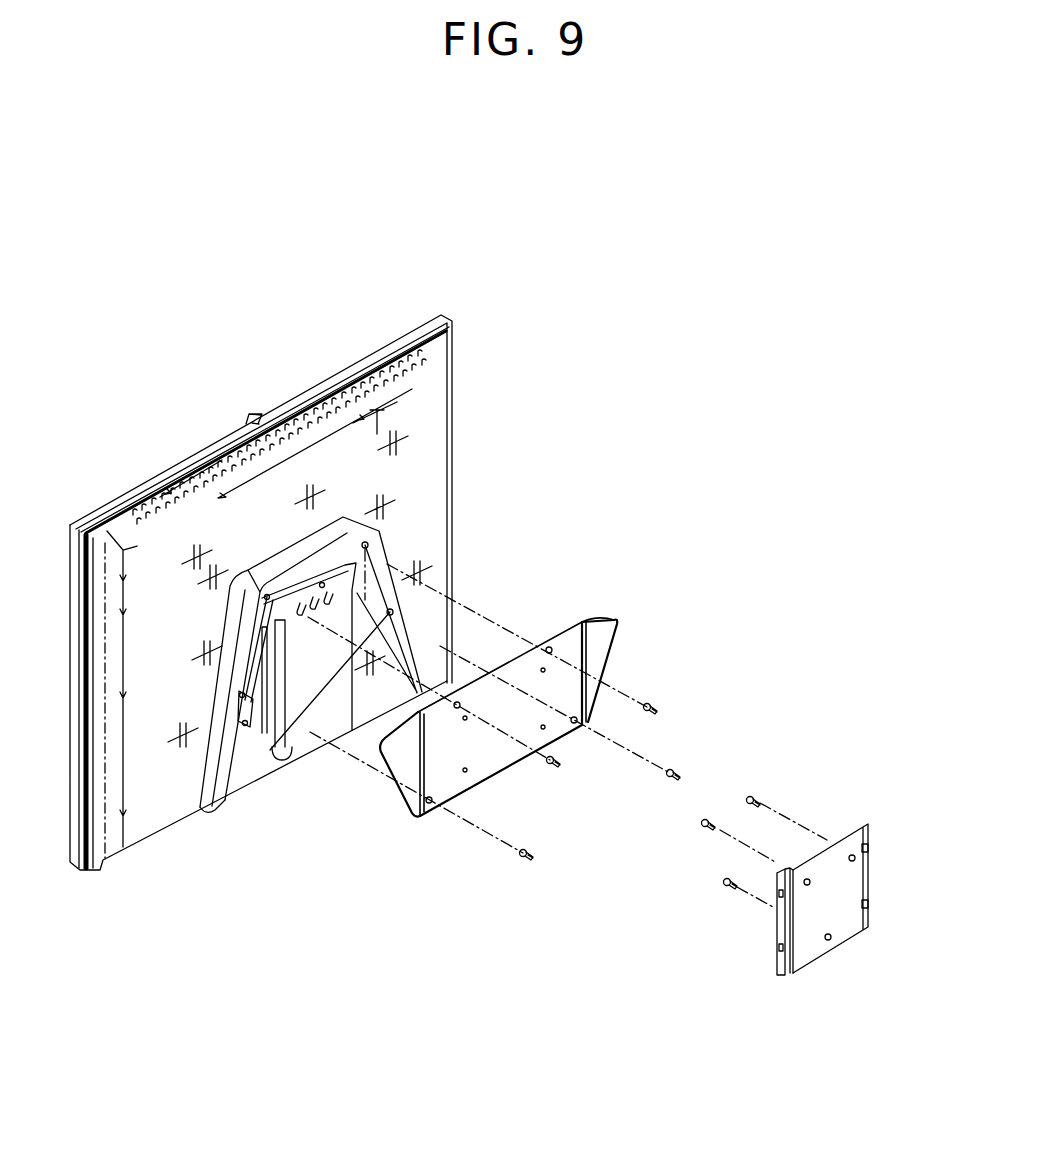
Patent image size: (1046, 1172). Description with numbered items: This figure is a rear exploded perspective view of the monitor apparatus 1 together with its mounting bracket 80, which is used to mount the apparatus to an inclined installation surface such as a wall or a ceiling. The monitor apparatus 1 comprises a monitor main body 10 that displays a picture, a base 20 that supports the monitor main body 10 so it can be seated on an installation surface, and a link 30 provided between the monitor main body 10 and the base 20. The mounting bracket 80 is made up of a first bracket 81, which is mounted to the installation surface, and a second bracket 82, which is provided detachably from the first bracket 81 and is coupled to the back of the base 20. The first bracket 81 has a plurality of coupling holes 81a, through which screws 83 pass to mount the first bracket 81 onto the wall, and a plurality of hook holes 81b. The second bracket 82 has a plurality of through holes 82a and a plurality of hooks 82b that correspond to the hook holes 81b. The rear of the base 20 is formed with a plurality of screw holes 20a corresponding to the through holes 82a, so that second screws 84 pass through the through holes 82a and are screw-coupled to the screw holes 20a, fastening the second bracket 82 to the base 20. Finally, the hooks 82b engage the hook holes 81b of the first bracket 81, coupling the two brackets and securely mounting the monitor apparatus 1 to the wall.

The monitor apparatus 1 is at (238, 337).
The monitor main body 10 is at (443, 432).
The base 20 is at (378, 533).
The screw holes 20a is at (267, 600).
The link 30 is at (365, 572).
The mounting bracket 80 is at (860, 728).
The first bracket 81 is at (833, 850).
The coupling holes 81a is at (830, 940).
The hook holes 81b is at (868, 893).
The second bracket 82 is at (613, 642).
The through holes 82a is at (574, 718).
The hooks 82b is at (543, 672).
The screws 83 is at (730, 885).
The second screws 84 is at (673, 777).